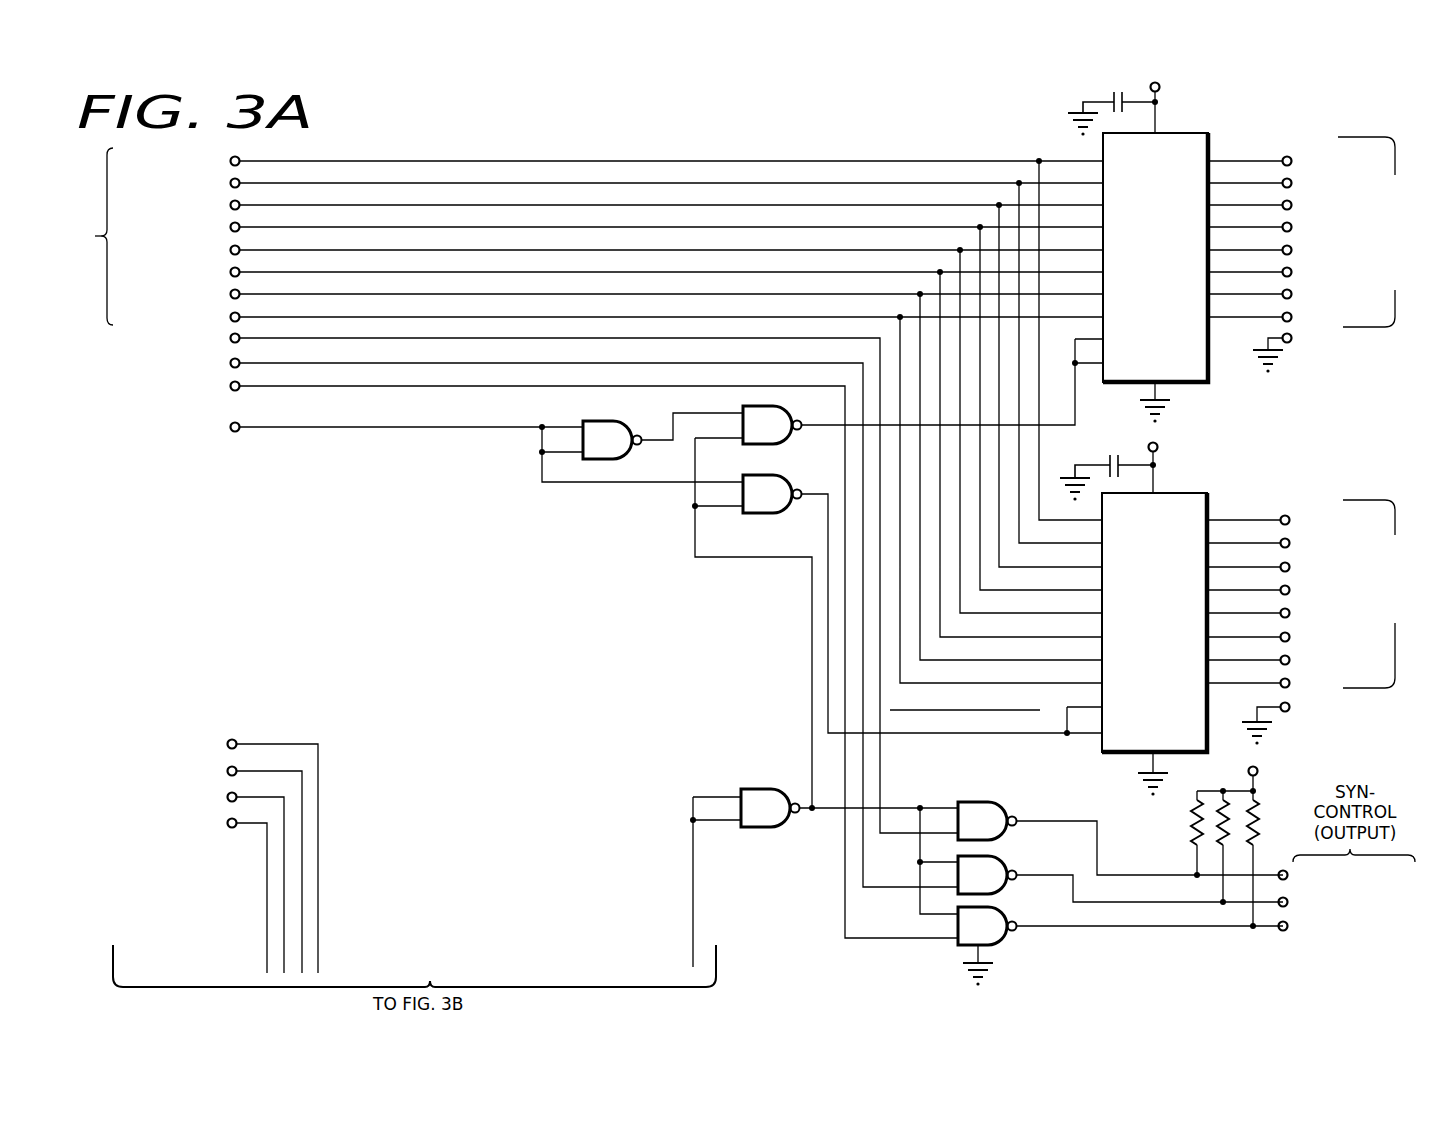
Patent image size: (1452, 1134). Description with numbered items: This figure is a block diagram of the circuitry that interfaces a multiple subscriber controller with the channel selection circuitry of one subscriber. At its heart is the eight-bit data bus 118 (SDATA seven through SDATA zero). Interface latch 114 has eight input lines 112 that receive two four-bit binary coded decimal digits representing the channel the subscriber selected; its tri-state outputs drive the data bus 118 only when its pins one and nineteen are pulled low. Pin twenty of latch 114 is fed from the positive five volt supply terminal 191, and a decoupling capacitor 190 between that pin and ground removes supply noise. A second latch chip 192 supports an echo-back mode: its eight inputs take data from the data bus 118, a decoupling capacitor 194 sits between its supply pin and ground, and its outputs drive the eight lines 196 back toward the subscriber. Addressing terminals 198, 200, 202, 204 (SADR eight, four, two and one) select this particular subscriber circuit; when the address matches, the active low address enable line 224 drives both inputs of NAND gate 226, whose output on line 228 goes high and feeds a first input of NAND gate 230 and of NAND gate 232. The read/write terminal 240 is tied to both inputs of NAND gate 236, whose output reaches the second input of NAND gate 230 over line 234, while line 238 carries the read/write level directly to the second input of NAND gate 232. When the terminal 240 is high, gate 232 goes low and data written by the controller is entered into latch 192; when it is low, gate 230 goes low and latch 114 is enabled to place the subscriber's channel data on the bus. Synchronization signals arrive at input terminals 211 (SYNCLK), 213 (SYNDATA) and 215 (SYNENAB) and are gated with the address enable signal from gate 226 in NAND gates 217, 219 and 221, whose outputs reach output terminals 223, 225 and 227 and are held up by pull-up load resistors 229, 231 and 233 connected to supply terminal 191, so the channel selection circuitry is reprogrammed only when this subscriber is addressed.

The data bus 118 is at (152, 235).
The SYNCLK input terminal 211 is at (243, 340).
The SYNDATA input terminal 213 is at (243, 365).
The SYNENAB input terminal 215 is at (243, 391).
The read/write terminal 240 is at (243, 431).
The decoupling capacitor 190 is at (1105, 98).
The positive 5 volt supply terminal 191 is at (1162, 97).
The input lines 112 is at (1255, 145).
The interface latch 114 is at (1156, 257).
The decoupling capacitor 194 is at (1090, 460).
The output lines 196 is at (1255, 505).
The second latch chip 192 is at (1152, 623).
The line 234 is at (690, 413).
The NAND gate 236 is at (628, 458).
The NAND gate 230 is at (793, 443).
The NAND gate 232 is at (765, 513).
The line 238 is at (637, 483).
The line 228 is at (812, 603).
The addressing terminal 202 is at (229, 769).
The addressing terminal 204 is at (229, 740).
The addressing terminal 200 is at (229, 800).
The addressing terminal 198 is at (230, 828).
The address enable line 224 is at (693, 893).
The NAND gate 226 is at (766, 828).
The NAND gate 217 is at (985, 803).
The NAND gate 219 is at (1000, 857).
The NAND gate 221 is at (1000, 907).
The pull-up load resistor 229 is at (1190, 840).
The pull-up load resistor 231 is at (1218, 806).
The pull-up load resistor 233 is at (1260, 822).
The SYNCLK output terminal 223 is at (1273, 869).
The SYNDATA output terminal 225 is at (1276, 910).
The SYNENAB output terminal 227 is at (1284, 932).